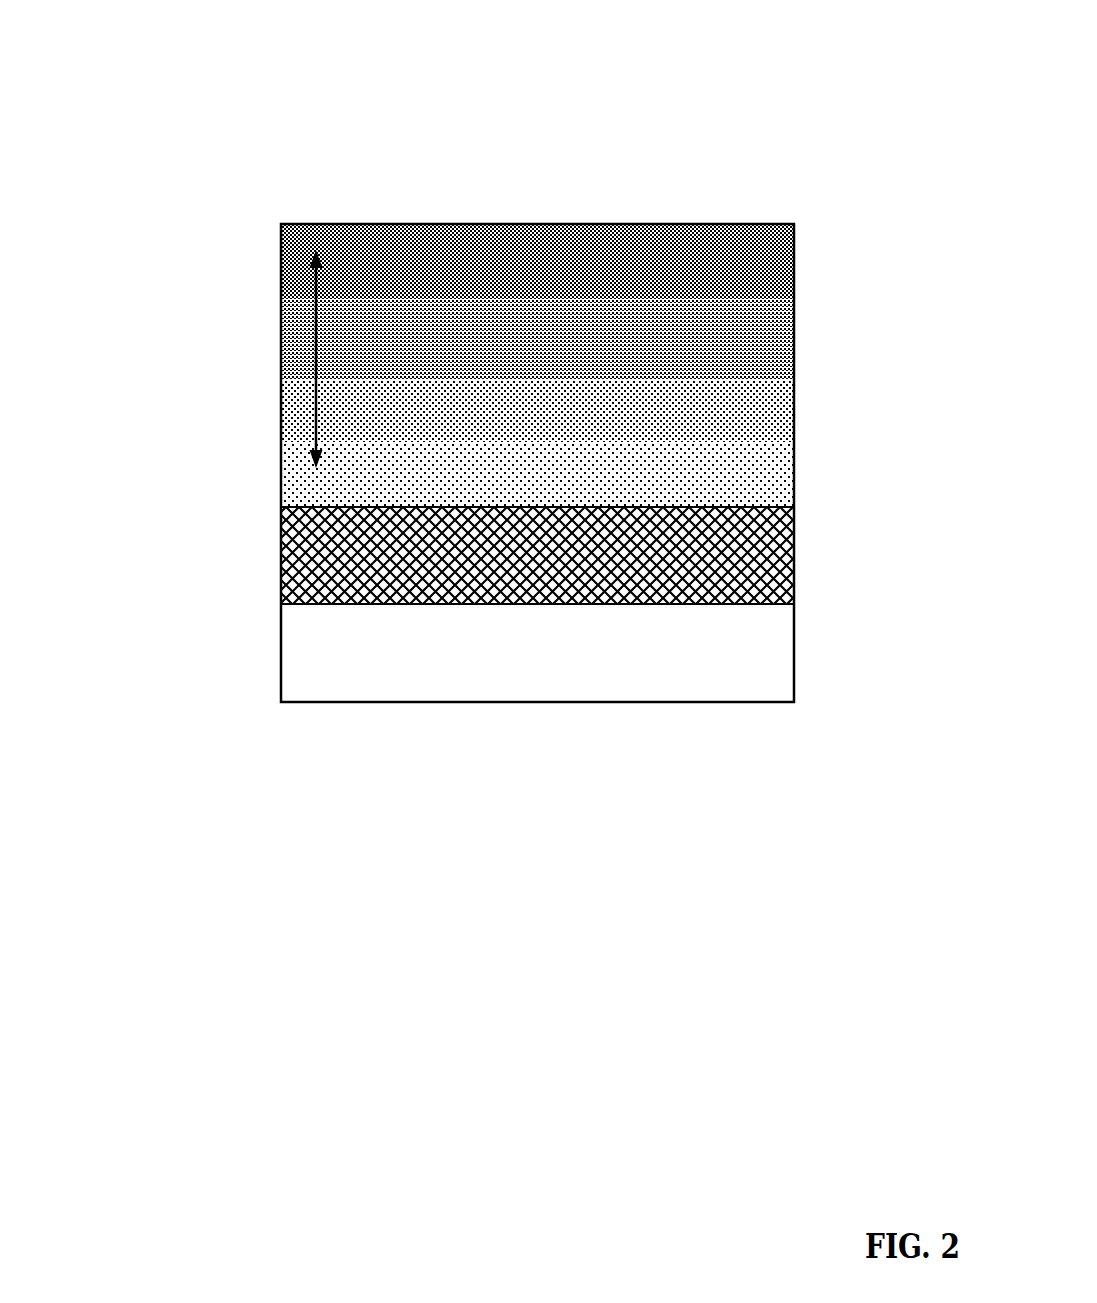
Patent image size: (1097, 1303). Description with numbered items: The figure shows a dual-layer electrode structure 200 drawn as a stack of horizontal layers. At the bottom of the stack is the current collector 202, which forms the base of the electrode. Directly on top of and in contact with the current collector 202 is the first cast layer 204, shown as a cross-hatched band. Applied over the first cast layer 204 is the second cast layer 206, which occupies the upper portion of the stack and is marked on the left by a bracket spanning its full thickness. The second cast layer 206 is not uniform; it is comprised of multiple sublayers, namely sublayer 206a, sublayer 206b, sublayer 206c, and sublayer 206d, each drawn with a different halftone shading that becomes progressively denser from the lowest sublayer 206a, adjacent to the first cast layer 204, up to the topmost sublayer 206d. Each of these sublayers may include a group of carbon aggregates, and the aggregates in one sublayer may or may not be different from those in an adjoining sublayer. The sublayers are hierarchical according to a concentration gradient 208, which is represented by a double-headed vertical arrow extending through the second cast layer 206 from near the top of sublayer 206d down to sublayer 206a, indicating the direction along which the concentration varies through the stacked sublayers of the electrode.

The dual-layer electrode structure 200 is at (96, 75).
The current collector 202 is at (281, 652).
The first cast layer 204 is at (281, 552).
The second cast layer 206 is at (465, 367).
The sublayer 206a is at (794, 468).
The sublayer 206b is at (794, 410).
The sublayer 206c is at (794, 337).
The sublayer 206d is at (794, 263).
The concentration gradient 208 is at (318, 328).